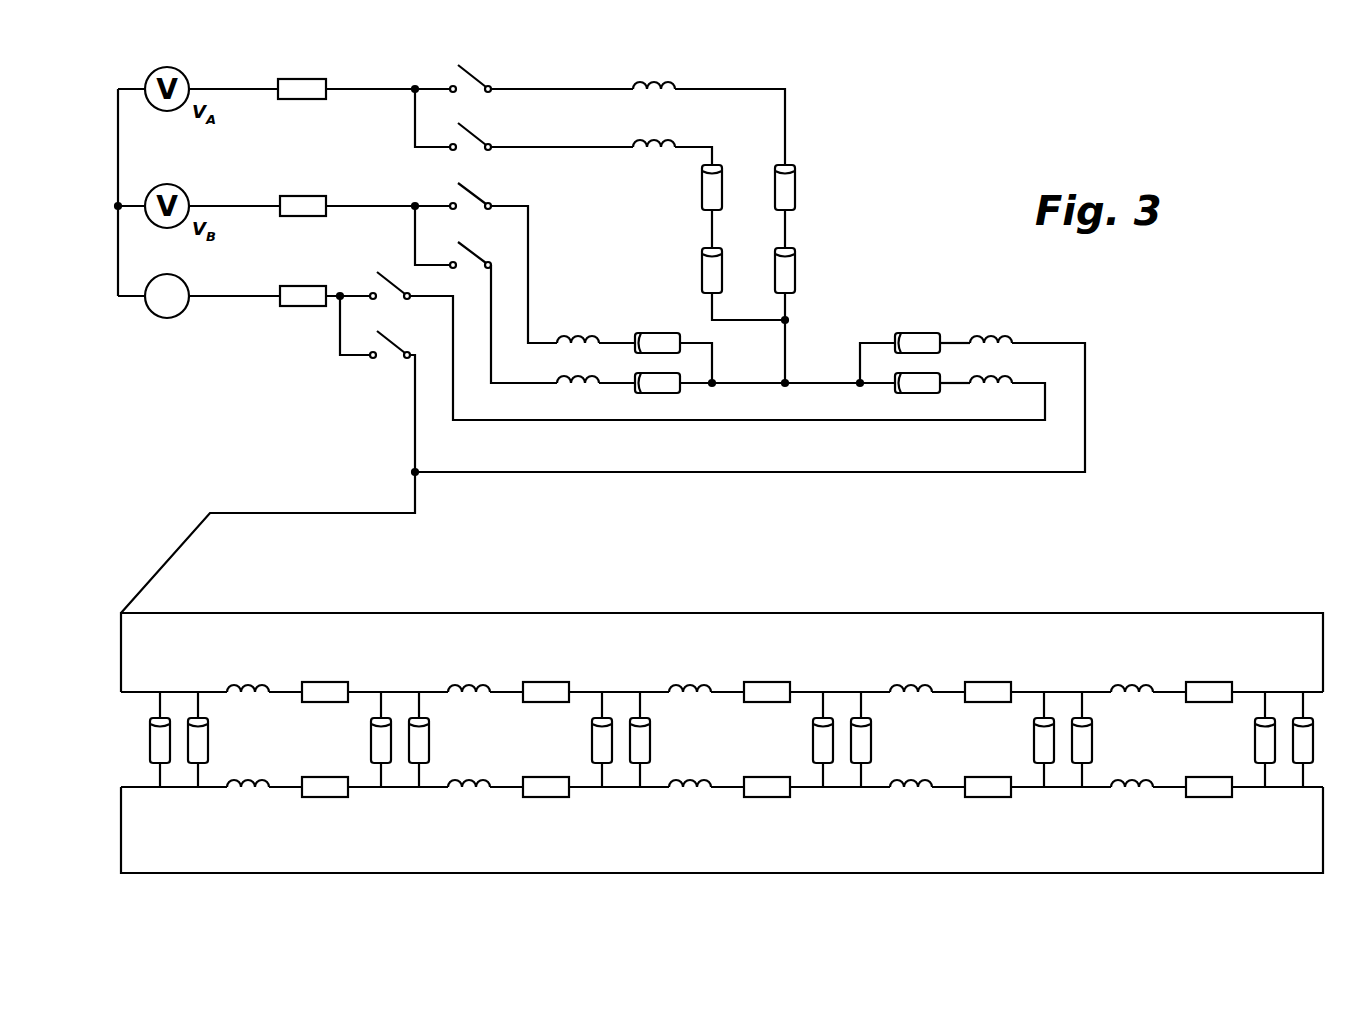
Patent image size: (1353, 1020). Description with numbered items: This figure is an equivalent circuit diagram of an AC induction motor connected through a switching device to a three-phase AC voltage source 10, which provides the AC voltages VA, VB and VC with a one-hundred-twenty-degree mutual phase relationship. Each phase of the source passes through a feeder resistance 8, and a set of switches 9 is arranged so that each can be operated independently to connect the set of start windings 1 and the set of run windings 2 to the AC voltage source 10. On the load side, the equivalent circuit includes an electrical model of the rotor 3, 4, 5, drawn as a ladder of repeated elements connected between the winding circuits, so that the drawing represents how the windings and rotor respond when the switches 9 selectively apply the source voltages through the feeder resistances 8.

The set of start windings 1 is at (802, 223).
The set of run windings 2 is at (695, 222).
The rotor electrical model 3 is at (722, 743).
The rotor electrical model 4 is at (565, 720).
The rotor electrical model 5 is at (729, 707).
The feeder resistance 8 is at (302, 318).
The switch 9 is at (514, 169).
The three-phase AC voltage source 10 is at (170, 326).